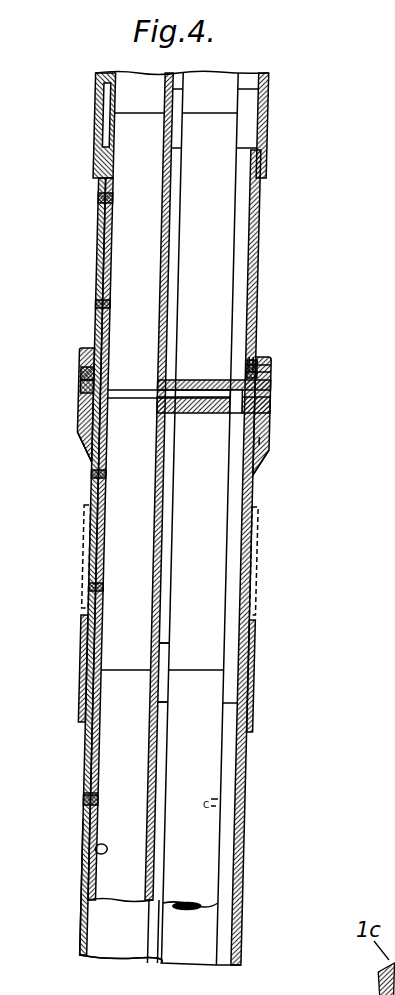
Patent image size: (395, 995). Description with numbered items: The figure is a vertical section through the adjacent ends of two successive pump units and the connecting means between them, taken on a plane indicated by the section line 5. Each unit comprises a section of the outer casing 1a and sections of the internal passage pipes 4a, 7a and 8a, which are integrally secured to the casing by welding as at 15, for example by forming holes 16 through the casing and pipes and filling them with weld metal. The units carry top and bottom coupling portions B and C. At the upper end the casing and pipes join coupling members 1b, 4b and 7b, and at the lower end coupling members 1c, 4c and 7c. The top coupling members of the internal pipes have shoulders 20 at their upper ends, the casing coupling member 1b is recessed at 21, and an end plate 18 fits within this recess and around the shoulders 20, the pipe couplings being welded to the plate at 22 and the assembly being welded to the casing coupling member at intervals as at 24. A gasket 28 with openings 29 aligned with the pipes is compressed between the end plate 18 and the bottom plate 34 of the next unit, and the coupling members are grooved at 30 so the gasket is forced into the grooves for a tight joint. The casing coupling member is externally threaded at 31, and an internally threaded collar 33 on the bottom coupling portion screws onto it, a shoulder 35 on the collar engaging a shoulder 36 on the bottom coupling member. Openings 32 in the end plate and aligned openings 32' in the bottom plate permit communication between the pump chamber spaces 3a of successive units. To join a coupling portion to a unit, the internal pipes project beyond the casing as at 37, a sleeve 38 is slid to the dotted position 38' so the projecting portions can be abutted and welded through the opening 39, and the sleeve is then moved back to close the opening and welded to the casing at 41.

The outer casing section 1a is at (86, 830).
The top coupling member of the outer casing 1b is at (92, 519).
The bottom coupling member of the outer casing 1c is at (100, 214).
The pump chamber space 3a is at (230, 581).
The internal pipe section 4a is at (113, 92).
The top coupling member of internal pipe 4b is at (94, 560).
The bottom coupling member of internal pipe 4c is at (172, 228).
The section line 5- 5 is at (318, 305).
The internal pipe section 7a is at (220, 102).
The top coupling member of internal pipe 7b is at (238, 492).
The bottom coupling member of internal pipe 7c is at (208, 256).
The internal pipe section 8a is at (192, 947).
The weld 15 is at (88, 801).
The hole 16 is at (92, 795).
The end plate 18 is at (203, 427).
The shoulder 20 is at (86, 412).
The recess 21 is at (272, 401).
The weld 22 is at (202, 447).
The weld 24 is at (99, 474).
The gasket 28 is at (97, 364).
The gasket opening 29 is at (92, 386).
The groove 30 is at (108, 397).
The threaded upper end 31 is at (85, 440).
The plate opening 32 is at (320, 358).
The plate opening 32' is at (306, 335).
The internally threaded collar 33 is at (270, 442).
The bottom plate 34 is at (253, 341).
The collar shoulder 35 is at (257, 362).
The coupling member shoulder 36 is at (272, 371).
The projecting portion 37 is at (200, 694).
The sleeve 38 is at (195, 669).
The sleeve assembling position 38' is at (287, 561).
The opening 39 is at (230, 695).
The weld 41 is at (253, 626).
The top coupling portion B is at (256, 498).
The bottom coupling portion C is at (256, 291).